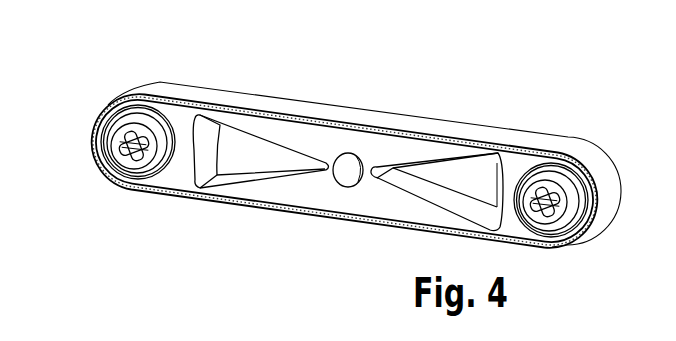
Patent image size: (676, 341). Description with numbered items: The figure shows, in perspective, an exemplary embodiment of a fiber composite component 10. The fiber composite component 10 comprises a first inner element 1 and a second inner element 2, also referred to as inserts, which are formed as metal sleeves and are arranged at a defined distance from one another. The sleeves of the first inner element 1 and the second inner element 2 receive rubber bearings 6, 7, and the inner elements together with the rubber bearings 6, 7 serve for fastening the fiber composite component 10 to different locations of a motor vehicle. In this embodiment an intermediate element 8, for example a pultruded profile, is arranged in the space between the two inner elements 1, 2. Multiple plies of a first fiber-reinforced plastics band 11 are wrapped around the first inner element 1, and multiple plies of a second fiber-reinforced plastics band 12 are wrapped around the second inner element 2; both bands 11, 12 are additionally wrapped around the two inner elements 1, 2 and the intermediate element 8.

The first inner element 1 is at (95, 100).
The second inner element 2 is at (572, 176).
The rubber bearing 6 is at (122, 168).
The rubber bearing 7 is at (560, 212).
The intermediate element 8 is at (308, 140).
The fiber composite component 10 is at (451, 92).
The first fiber-reinforced plastics band 11 is at (170, 122).
The second fiber-reinforced plastics band 12 is at (522, 160).